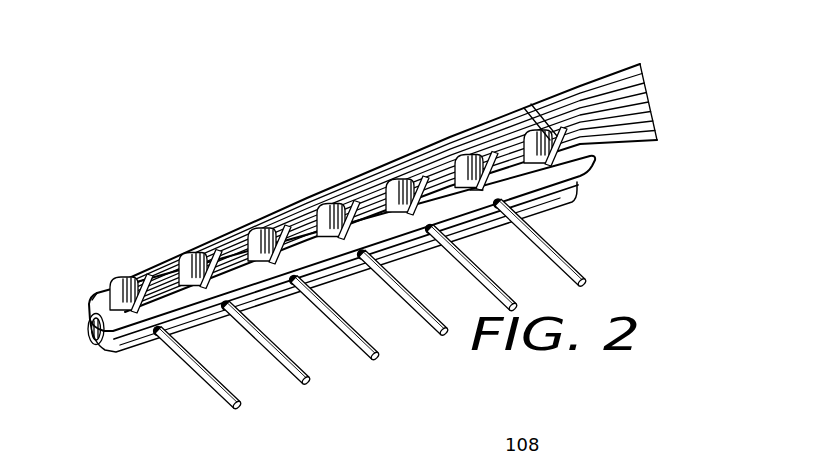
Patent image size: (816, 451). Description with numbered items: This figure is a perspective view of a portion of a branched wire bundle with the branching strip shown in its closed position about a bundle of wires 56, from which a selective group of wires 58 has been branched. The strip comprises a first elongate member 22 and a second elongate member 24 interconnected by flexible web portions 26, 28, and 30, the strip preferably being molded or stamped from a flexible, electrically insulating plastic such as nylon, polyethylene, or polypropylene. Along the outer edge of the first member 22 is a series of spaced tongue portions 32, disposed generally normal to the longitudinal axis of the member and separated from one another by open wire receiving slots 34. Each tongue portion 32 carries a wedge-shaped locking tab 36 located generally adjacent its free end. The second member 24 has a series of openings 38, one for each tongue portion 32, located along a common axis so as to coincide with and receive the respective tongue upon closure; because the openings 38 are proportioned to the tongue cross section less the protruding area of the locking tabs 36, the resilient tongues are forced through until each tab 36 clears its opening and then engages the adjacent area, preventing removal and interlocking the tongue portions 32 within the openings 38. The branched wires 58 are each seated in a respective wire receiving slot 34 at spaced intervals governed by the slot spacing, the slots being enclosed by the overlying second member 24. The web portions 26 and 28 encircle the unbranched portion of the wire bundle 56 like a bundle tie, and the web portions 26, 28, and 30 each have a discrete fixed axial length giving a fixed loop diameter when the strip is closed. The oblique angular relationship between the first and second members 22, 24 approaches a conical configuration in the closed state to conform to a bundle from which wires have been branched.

The first elongate member 22 is at (127, 348).
The second elongate member 24 is at (103, 283).
The flexible web portion 26 is at (533, 108).
The flexible web portion 28 is at (346, 190).
The flexible web portion 30 is at (91, 334).
The tongue portion 32 is at (268, 228).
The wire receiving slot 34 is at (213, 302).
The locking tab 36 is at (492, 180).
The opening 38 is at (480, 195).
The bundle of wires 56 is at (586, 95).
The wires 58 is at (370, 362).